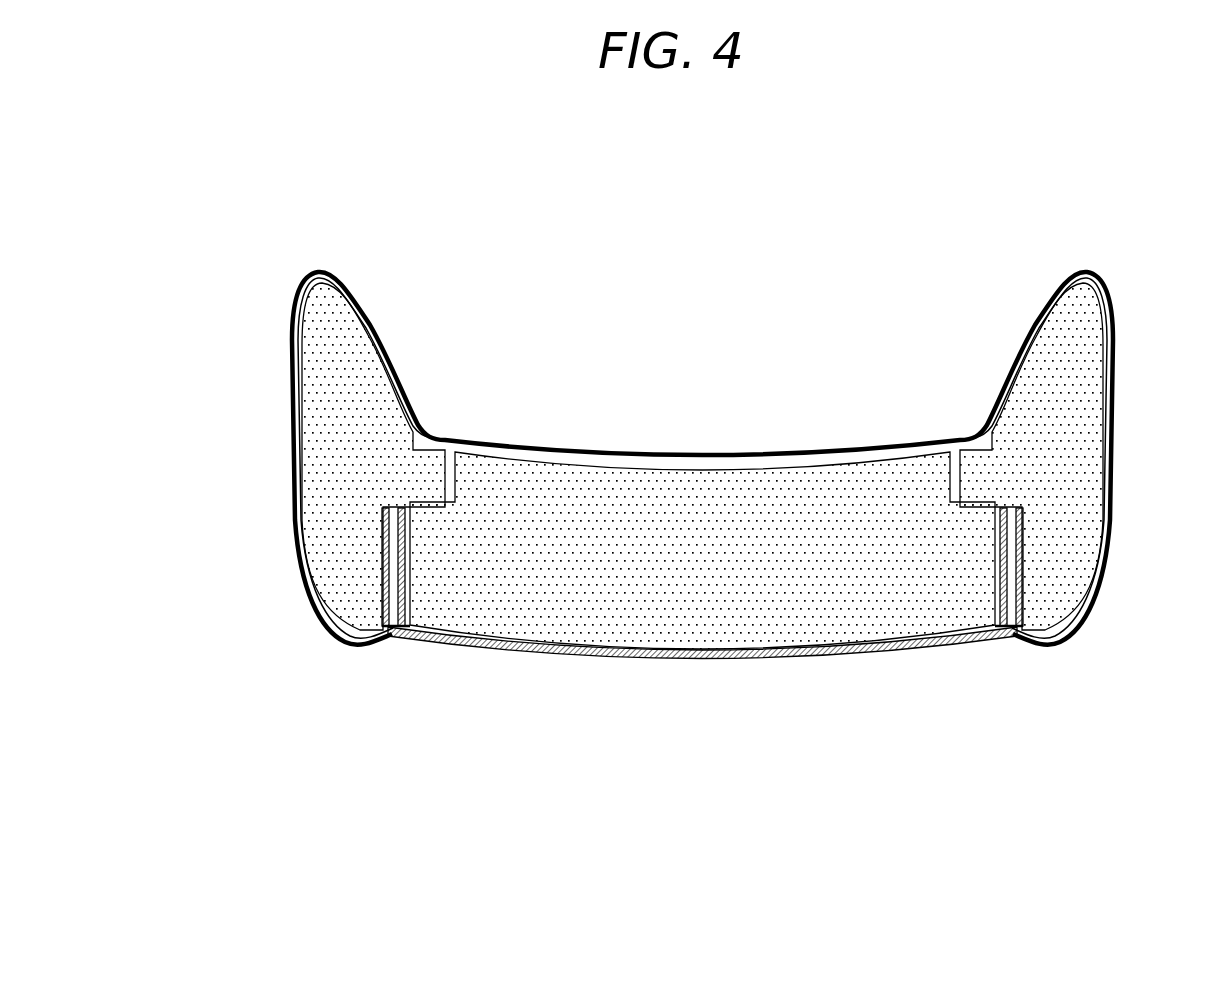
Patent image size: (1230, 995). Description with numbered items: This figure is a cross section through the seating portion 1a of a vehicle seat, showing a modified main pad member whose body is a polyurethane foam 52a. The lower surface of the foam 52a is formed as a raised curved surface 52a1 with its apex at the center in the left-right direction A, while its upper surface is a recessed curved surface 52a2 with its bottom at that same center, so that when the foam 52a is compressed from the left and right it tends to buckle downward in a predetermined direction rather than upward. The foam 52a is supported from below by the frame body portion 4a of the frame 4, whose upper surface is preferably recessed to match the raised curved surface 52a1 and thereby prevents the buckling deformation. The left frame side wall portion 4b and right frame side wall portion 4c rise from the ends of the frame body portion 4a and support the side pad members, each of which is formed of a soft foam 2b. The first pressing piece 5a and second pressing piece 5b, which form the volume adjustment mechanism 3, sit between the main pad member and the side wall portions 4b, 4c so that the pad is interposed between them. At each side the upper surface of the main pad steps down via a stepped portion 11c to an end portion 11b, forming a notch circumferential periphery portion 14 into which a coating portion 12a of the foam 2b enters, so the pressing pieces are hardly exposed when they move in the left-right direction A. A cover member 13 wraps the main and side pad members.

The seating portion 1a is at (782, 243).
The foam 2b is at (326, 353).
The cover member 13 is at (1115, 362).
The notch circumferential periphery portion 14 is at (450, 447).
The foam 52a is at (690, 503).
The recessed curved surface 52a2 is at (845, 465).
The raised curved surface 52a1 is at (955, 645).
The frame 4 is at (874, 705).
The frame body portion 4a is at (705, 660).
The left frame side wall portion 4b is at (383, 600).
The right frame side wall portion 4c is at (1022, 600).
The first pressing piece 5a is at (402, 558).
The second pressing piece 5b is at (1003, 565).
The volume adjustment mechanism 3 is at (420, 582).
The end portion 11b is at (417, 503).
The stepped portion 11c is at (450, 476).
The coating portion 12a is at (432, 496).
The left-right direction A is at (1070, 775).